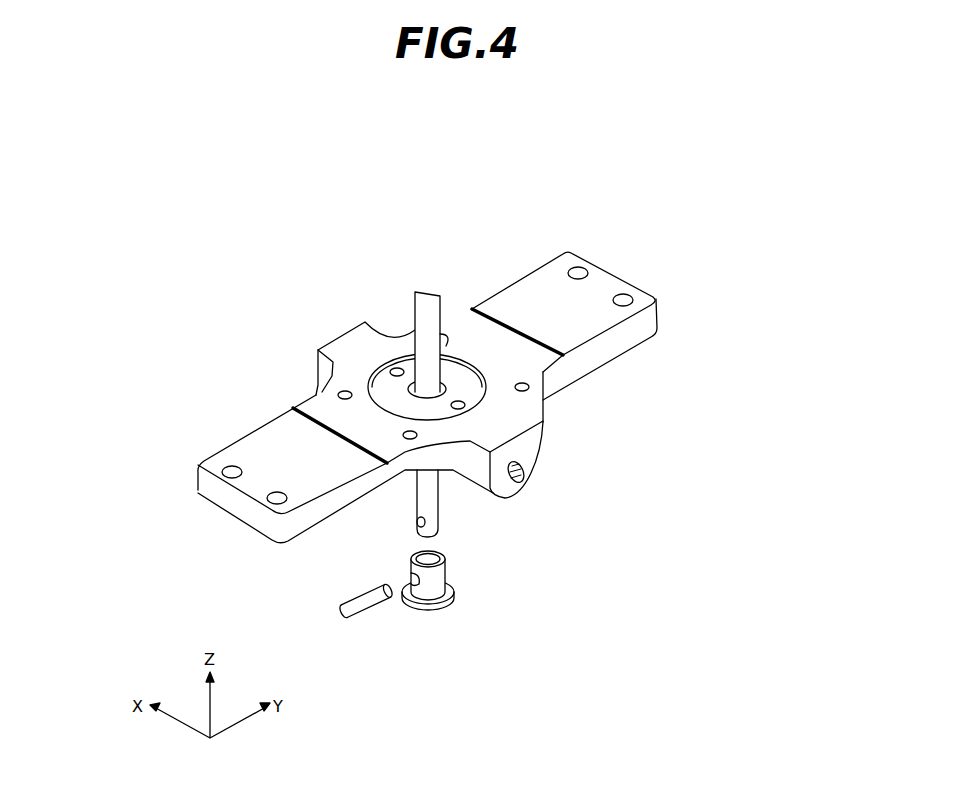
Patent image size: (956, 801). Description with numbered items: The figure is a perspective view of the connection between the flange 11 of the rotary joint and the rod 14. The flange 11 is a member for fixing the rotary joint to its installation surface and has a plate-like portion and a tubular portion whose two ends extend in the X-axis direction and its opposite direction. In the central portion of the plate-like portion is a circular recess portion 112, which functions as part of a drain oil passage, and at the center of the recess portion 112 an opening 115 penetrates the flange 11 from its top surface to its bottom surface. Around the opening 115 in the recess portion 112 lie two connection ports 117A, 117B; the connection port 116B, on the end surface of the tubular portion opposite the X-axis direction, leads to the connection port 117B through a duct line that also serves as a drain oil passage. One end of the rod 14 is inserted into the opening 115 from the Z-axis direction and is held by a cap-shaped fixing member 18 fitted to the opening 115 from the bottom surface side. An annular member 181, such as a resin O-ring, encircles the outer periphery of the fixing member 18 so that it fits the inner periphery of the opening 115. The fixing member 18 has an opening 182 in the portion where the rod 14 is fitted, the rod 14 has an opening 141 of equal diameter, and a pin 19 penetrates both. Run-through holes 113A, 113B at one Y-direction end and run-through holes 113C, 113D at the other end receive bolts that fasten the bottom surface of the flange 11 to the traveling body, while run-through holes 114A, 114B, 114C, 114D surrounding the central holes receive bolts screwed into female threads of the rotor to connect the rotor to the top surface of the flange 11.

The flange 11 is at (572, 328).
The recess portion 112 is at (460, 377).
The run-through hole 113A is at (580, 268).
The run-through hole 113B is at (630, 296).
The run-through hole 113C is at (225, 476).
The run-through hole 113D is at (277, 507).
The run-through hole 114A is at (442, 330).
The run-through hole 114B is at (530, 388).
The run-through hole 114C is at (418, 436).
The run-through hole 114D is at (338, 396).
The opening 115 is at (408, 382).
The connection port 116B is at (528, 480).
The connection port 117A is at (393, 360).
The connection port 117B is at (466, 405).
The rod 14 is at (425, 307).
The opening 141 is at (418, 523).
The fixing member 18 is at (444, 617).
The annular member 181 is at (424, 603).
The opening 182 is at (404, 598).
The pin 19 is at (362, 599).